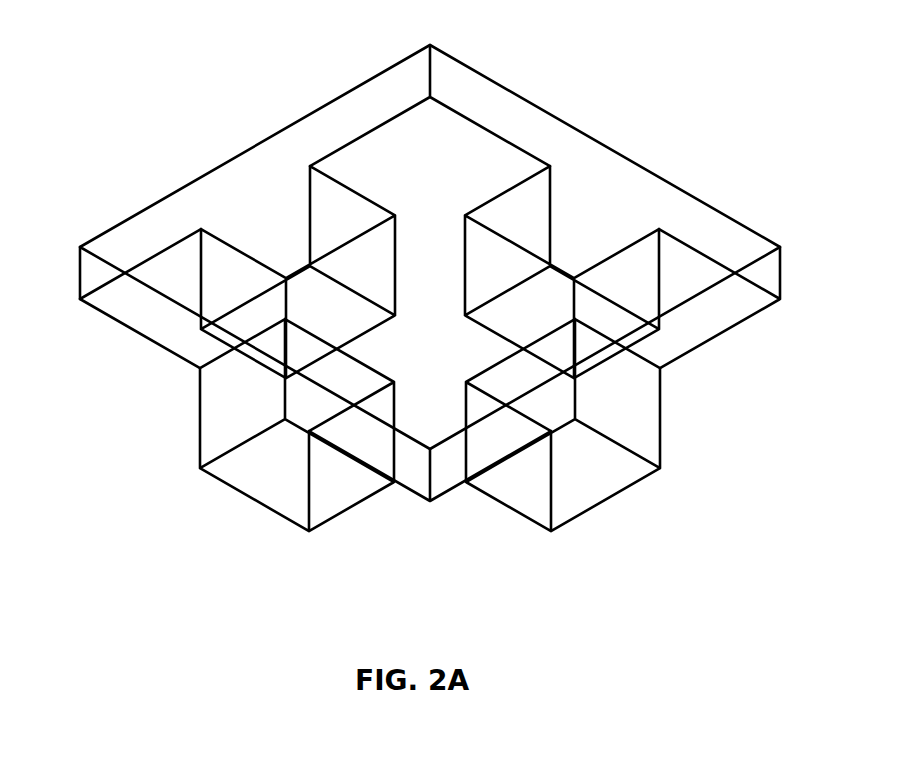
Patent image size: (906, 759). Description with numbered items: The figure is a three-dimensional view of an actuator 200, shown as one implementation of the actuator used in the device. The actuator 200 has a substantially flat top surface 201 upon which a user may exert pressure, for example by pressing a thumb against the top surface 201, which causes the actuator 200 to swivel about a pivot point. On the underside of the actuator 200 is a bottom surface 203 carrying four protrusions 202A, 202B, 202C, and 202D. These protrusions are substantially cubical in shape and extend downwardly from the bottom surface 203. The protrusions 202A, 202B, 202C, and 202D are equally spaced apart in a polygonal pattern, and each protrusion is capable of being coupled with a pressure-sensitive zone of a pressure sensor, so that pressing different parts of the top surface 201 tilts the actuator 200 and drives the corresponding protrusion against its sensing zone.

The actuator 200 is at (140, 68).
The top surface 201 is at (475, 57).
The protrusion 202A is at (345, 512).
The protrusion 202B is at (663, 435).
The protrusion 202C is at (598, 222).
The protrusion 202D is at (275, 222).
The bottom surface 203 is at (120, 356).